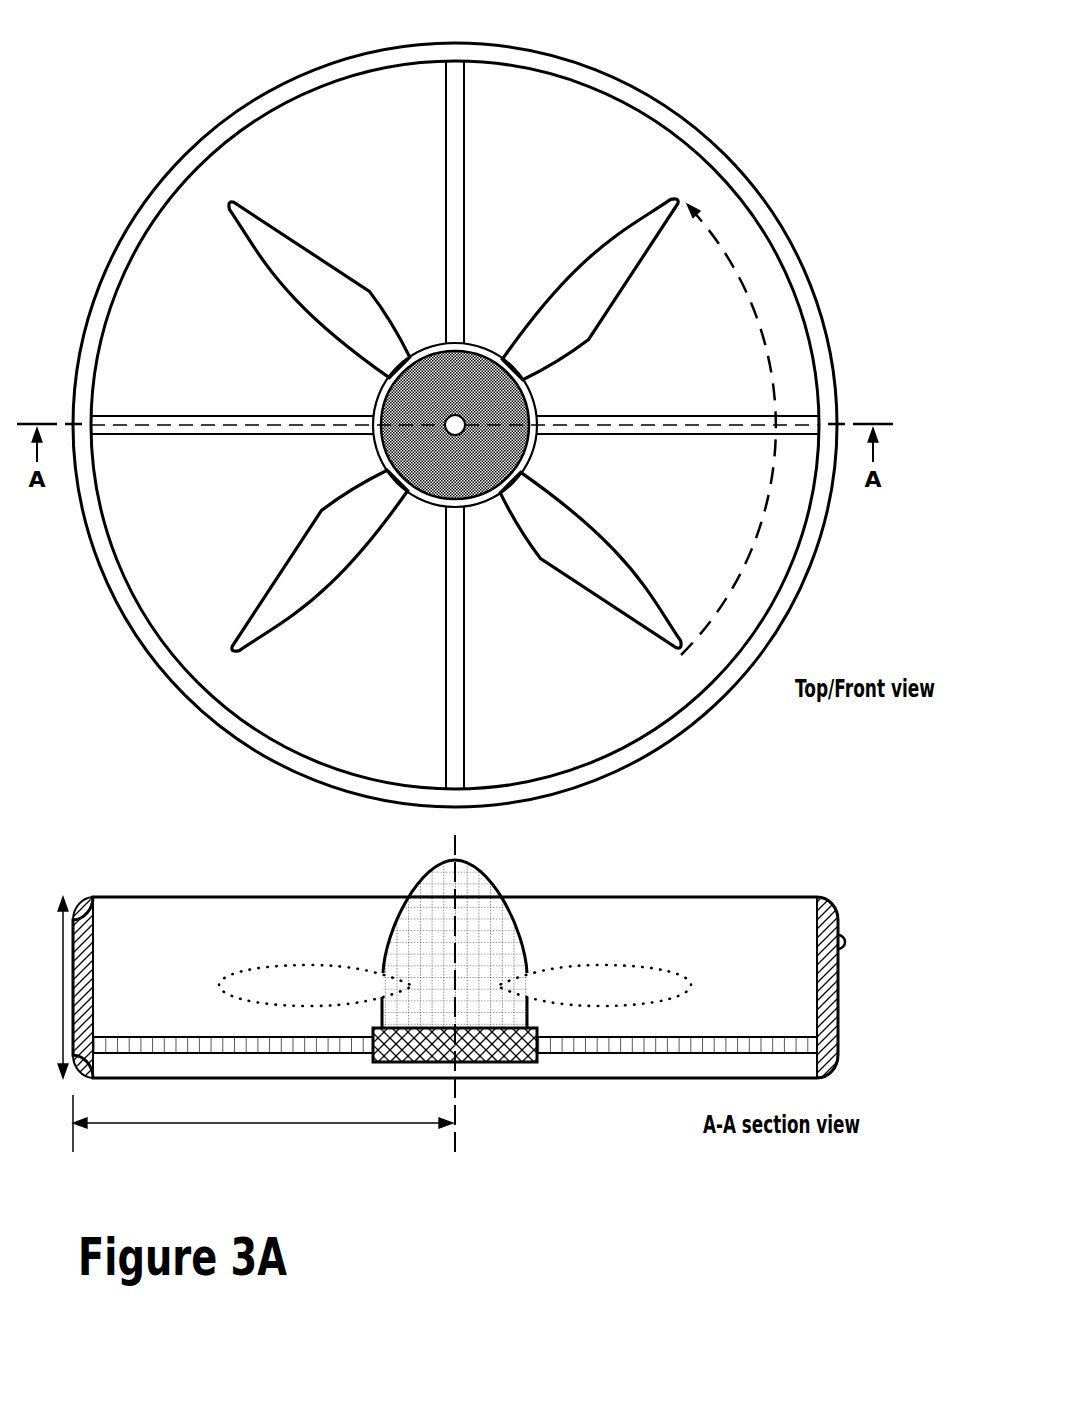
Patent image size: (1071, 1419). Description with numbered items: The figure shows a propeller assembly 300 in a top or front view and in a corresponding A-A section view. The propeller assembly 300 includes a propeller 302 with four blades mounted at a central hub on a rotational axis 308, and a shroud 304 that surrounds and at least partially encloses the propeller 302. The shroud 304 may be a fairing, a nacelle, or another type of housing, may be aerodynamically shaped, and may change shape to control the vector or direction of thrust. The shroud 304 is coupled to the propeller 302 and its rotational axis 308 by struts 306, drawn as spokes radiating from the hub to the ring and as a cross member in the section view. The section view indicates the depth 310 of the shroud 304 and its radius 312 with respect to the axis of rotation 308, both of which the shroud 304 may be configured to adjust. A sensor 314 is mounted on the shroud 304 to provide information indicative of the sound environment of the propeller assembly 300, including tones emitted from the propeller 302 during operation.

The propeller assembly 300 is at (837, 90).
The propeller 302 is at (592, 255).
The shroud 304 is at (634, 74).
The struts 306 is at (446, 192).
The rotational axis 308 is at (458, 1101).
The depth 310 is at (60, 990).
The radius 312 is at (387, 1126).
The sensor 314 is at (846, 940).